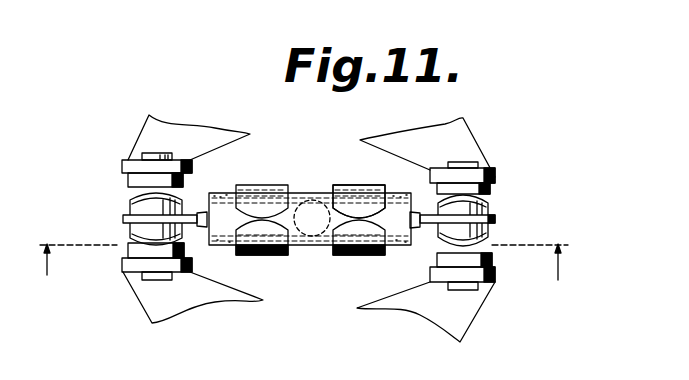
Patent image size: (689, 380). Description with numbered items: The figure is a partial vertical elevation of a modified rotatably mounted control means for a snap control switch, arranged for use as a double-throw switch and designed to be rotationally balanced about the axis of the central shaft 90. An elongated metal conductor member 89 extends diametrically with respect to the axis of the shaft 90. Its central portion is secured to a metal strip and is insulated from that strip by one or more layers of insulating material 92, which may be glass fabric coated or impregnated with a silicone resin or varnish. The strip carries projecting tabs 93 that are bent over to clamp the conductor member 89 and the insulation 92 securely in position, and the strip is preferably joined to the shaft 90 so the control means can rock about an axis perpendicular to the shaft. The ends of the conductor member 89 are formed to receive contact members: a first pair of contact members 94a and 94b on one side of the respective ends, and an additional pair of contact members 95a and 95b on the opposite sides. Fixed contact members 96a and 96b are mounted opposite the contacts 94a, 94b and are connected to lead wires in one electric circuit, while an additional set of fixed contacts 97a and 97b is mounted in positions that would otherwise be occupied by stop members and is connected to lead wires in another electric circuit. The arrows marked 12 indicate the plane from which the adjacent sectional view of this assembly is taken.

The section line 12- 12 is at (313, 265).
The conductor member 89 is at (358, 205).
The shaft 90 is at (312, 207).
The insulating material 92 is at (295, 198).
The projecting tabs 93 is at (253, 205).
The contact member 94a is at (487, 208).
The contact member 94b is at (127, 228).
The contact member 95a is at (492, 228).
The contact member 95b is at (132, 207).
The fixed contact member 96a is at (495, 183).
The fixed contact member 96b is at (128, 252).
The fixed contact 97a is at (493, 263).
The fixed contact 97b is at (130, 178).